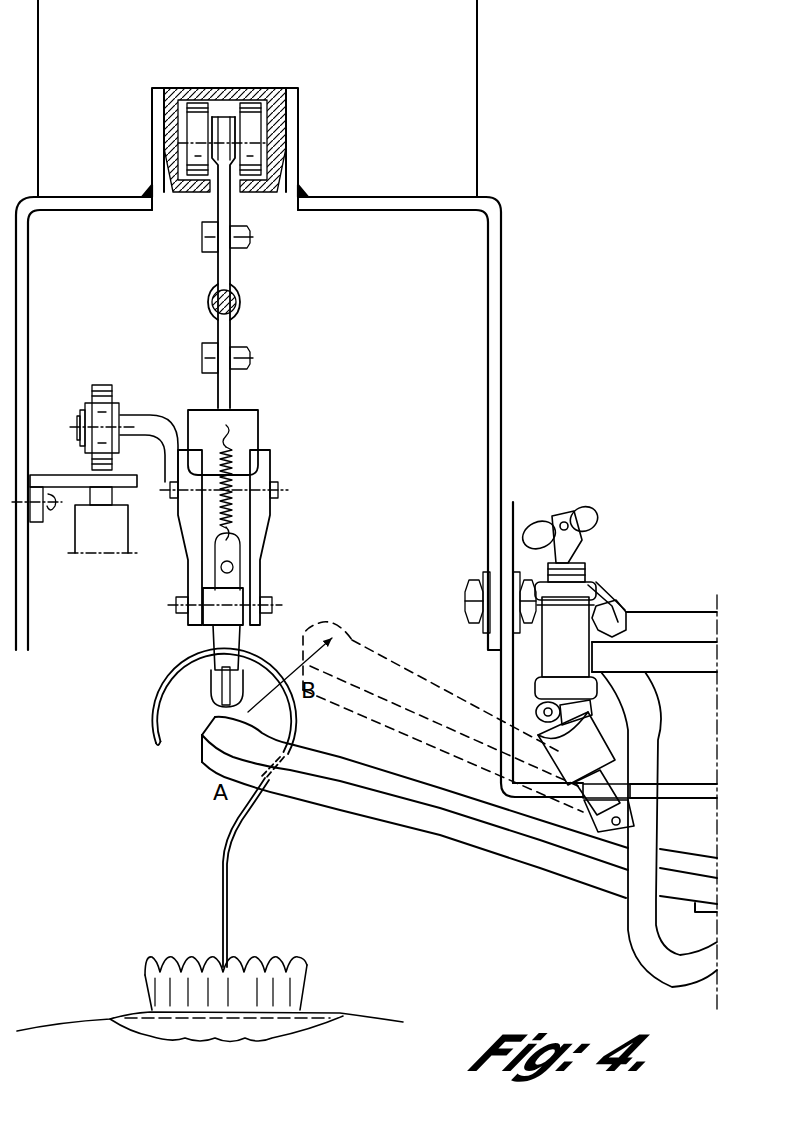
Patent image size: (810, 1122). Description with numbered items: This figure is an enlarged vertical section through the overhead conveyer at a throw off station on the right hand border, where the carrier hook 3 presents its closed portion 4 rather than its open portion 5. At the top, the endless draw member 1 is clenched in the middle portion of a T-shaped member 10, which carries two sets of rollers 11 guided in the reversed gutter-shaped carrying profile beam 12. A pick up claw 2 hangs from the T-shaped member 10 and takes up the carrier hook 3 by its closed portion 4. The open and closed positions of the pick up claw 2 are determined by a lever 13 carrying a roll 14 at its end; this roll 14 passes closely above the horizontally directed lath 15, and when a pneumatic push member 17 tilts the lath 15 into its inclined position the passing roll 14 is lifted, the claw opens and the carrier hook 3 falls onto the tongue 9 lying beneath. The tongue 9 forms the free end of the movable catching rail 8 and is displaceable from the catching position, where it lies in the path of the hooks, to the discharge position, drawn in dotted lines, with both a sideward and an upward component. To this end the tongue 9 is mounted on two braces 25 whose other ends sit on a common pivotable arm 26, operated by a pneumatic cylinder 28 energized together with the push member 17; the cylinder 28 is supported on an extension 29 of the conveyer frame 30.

The endless draw member 1 is at (212, 302).
The pick up claw 2 is at (275, 553).
The carrier hook 3 is at (162, 680).
The closed portion 4 is at (296, 711).
The open portion 5 is at (202, 788).
The catching rail 8 is at (488, 836).
The tongue 9 is at (362, 656).
The T-shaped member 10 is at (233, 264).
The rollers 11 is at (198, 118).
The carrying profile beam 12 is at (278, 120).
The lever 13 is at (139, 415).
The roll 14 is at (100, 385).
The lath 15 is at (57, 480).
The pneumatic push member 17 is at (80, 538).
The braces 25 is at (650, 955).
The common arm 26 is at (656, 613).
The pneumatic cylinder 28 is at (555, 648).
The extension 29 is at (682, 791).
The frame 30 is at (503, 300).